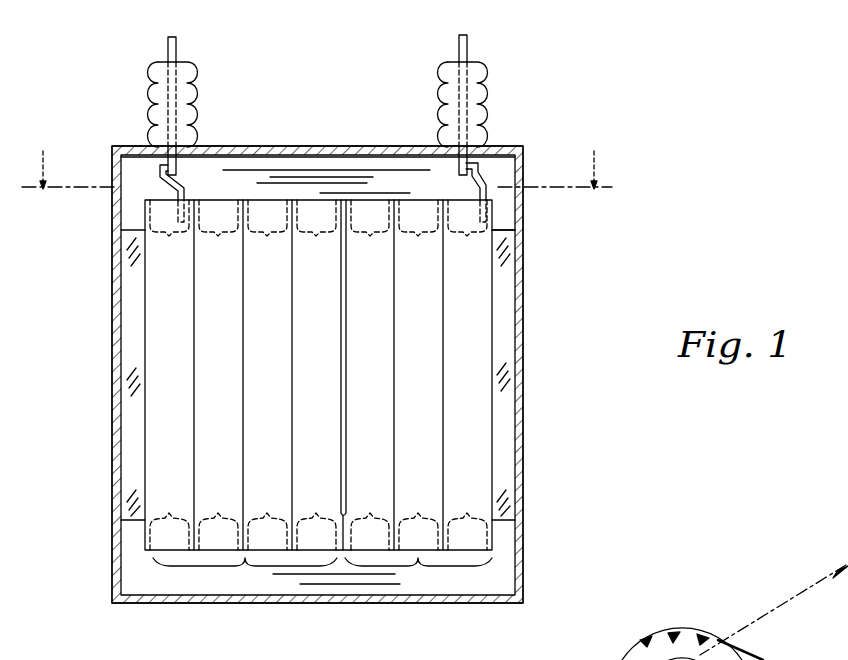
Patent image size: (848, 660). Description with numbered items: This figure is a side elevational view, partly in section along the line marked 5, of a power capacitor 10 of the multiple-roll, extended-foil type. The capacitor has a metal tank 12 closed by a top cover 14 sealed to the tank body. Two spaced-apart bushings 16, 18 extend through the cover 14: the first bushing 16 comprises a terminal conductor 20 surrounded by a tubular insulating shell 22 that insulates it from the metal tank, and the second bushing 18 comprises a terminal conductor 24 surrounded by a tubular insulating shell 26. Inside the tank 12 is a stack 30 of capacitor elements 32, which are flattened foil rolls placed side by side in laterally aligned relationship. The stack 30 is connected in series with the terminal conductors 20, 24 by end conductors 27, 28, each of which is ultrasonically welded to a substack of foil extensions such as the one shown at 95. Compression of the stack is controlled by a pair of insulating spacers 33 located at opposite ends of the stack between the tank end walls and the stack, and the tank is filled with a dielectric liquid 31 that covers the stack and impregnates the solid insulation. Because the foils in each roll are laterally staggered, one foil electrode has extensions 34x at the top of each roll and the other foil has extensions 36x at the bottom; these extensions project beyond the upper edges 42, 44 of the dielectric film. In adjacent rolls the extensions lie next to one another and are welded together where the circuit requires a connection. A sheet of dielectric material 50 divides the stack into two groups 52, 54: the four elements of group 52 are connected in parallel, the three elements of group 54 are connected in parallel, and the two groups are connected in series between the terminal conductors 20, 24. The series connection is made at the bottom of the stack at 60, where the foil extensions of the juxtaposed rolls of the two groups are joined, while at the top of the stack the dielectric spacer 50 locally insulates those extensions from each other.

The section line 5- 5 is at (317, 159).
The power capacitor 10 is at (532, 194).
The metal tank 12 is at (527, 282).
The top cover 14 is at (350, 152).
The bushing 16 is at (170, 103).
The bushing 18 is at (471, 100).
The terminal conductor 20 is at (176, 48).
The tubular insulating shell 22 is at (197, 96).
The terminal conductor 24 is at (467, 47).
The tubular insulating shell 26 is at (438, 94).
The end conductor 27 is at (165, 186).
The end conductor 28 is at (481, 187).
The stack 30 is at (156, 356).
The dielectric liquid 31 is at (280, 203).
The capacitor elements 32 is at (297, 500).
The insulating spacers 33 is at (128, 290).
The foil extensions 34x is at (300, 205).
The foil extensions 36x is at (388, 540).
The sheet of dielectric material 50 is at (346, 199).
The group 52 is at (245, 574).
The group 54 is at (418, 573).
The electrical connection 60 is at (343, 552).
The substack of foil extensions 95 is at (492, 208).
The upper edge 44 is at (782, 659).
The upper edge 42 is at (837, 650).